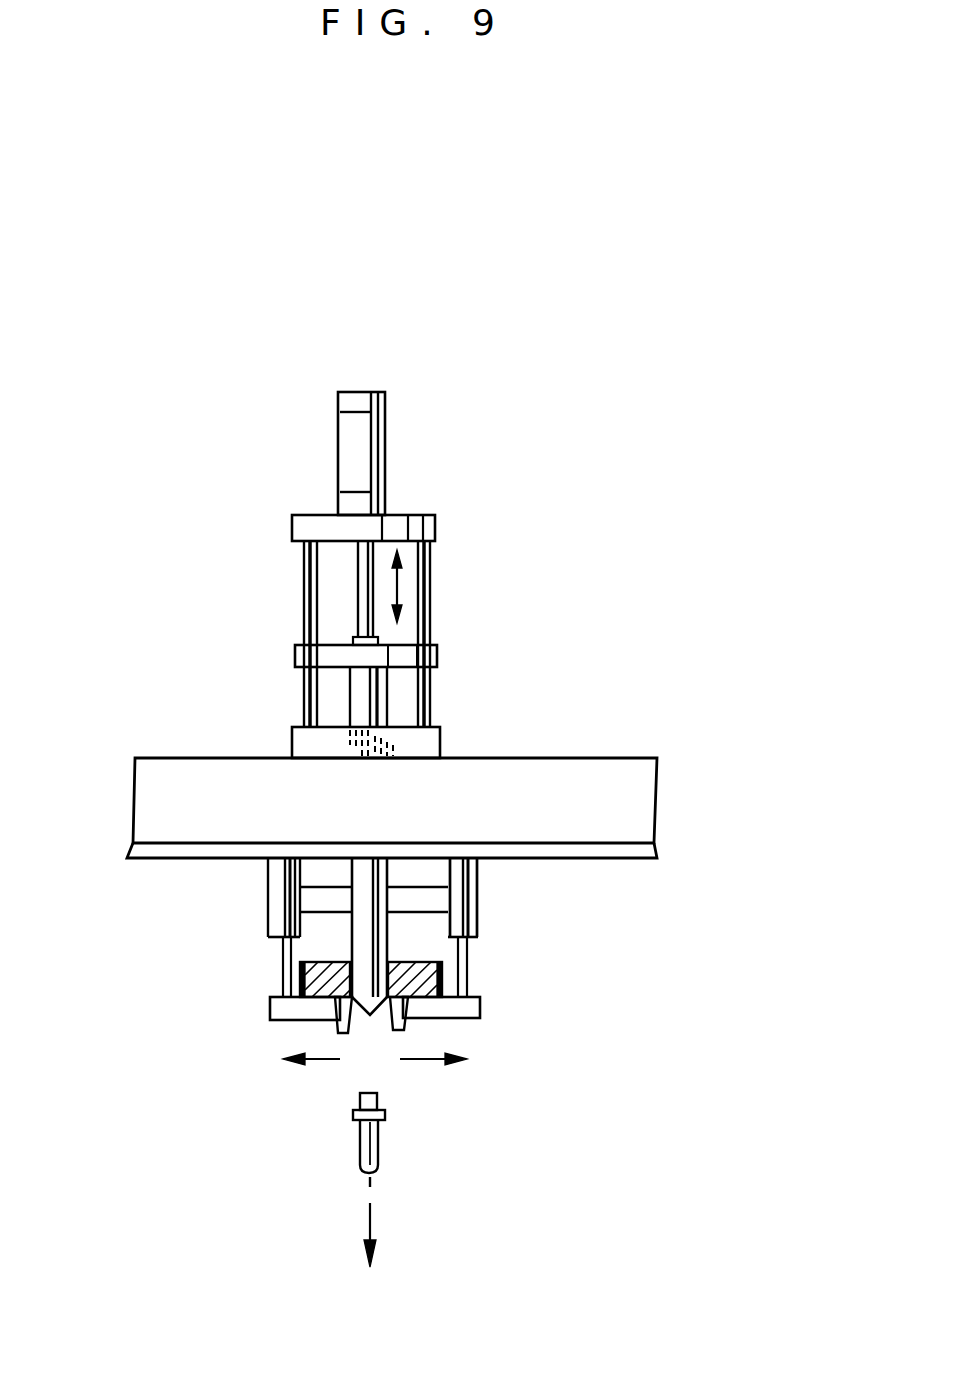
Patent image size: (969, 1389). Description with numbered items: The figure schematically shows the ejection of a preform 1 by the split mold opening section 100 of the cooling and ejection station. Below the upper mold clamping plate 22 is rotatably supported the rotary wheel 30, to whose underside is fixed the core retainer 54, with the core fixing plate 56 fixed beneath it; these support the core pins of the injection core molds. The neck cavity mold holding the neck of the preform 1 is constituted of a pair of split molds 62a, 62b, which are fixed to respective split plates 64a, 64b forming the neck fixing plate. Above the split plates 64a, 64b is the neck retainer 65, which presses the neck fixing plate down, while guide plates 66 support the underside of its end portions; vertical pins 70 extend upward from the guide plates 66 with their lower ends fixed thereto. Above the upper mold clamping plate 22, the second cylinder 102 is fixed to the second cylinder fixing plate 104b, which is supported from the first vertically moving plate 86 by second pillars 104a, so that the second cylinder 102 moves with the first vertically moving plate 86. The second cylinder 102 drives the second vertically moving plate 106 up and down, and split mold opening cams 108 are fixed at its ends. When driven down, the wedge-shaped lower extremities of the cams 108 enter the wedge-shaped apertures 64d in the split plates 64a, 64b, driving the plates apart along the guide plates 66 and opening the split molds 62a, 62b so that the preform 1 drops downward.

The preform 1 is at (380, 1158).
The upper mold clamping plate 22 is at (610, 782).
The rotary wheel 30 is at (633, 848).
The core retainer 54 is at (328, 887).
The core fixing plate 56 is at (413, 898).
The split mold 62a is at (392, 1030).
The split mold 62b is at (352, 1030).
The split plate 64a is at (470, 985).
The split plate 64b is at (280, 962).
The wedge-shaped aperture 64d is at (337, 987).
The neck retainer 65 is at (467, 965).
The guide plate 66 is at (277, 1007).
The vertical pin 70 is at (467, 945).
The first vertically moving plate 86 is at (320, 740).
The split mold opening section 100 is at (487, 573).
The second cylinder 102 is at (360, 467).
The second pillar 104a is at (307, 627).
The second cylinder fixing plate 104b is at (310, 528).
The second vertically moving plate 106 is at (433, 653).
The split mold opening cam 108 is at (310, 693).